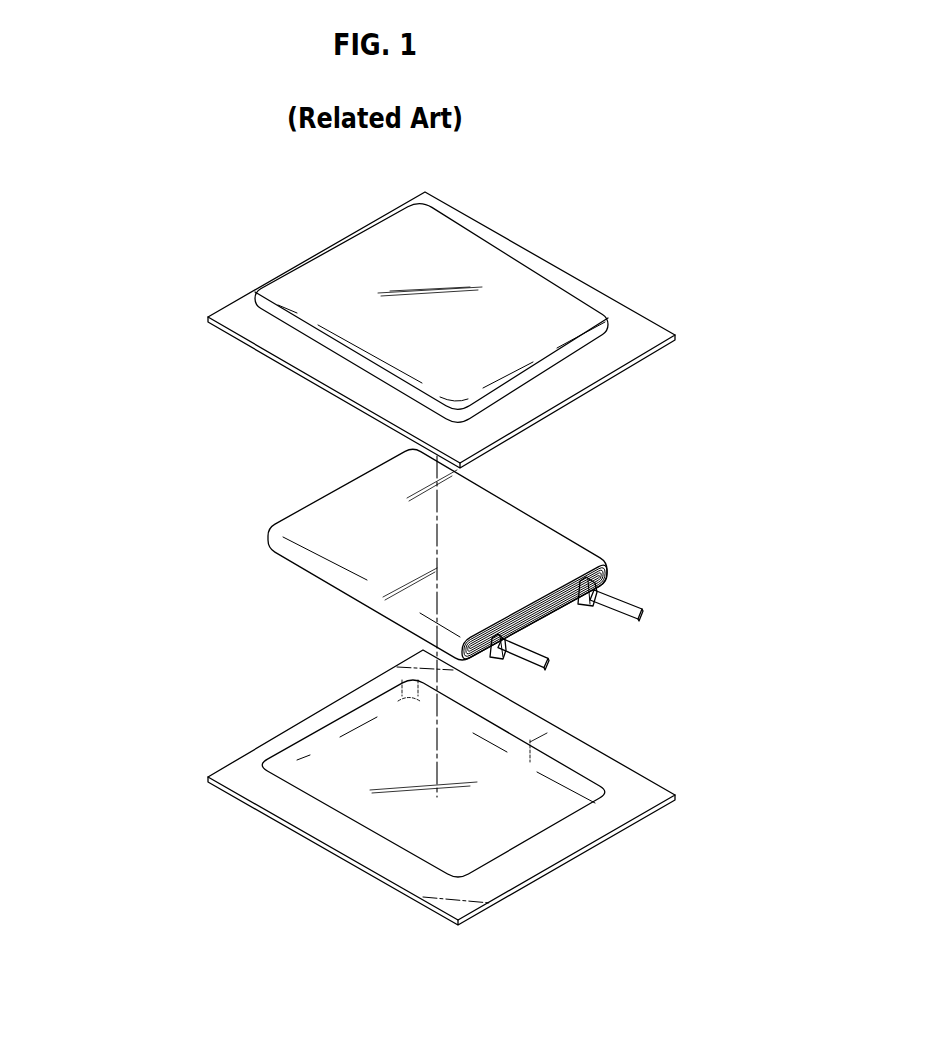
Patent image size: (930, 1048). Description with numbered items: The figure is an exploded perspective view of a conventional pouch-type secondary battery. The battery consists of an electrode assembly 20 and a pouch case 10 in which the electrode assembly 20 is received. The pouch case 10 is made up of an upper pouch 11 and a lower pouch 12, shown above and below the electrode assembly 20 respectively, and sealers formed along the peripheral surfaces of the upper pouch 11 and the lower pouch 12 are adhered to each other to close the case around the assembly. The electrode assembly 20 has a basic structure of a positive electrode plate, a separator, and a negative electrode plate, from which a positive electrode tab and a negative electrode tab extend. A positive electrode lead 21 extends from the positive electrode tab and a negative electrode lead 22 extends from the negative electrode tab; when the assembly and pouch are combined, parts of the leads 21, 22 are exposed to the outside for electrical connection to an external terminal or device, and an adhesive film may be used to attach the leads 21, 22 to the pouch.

The pouch case 10 is at (111, 481).
The upper pouch 11 is at (227, 333).
The lower pouch 12 is at (227, 767).
The electrode assembly 20 is at (541, 500).
The positive electrode lead 21 is at (638, 612).
The negative electrode lead 22 is at (540, 663).